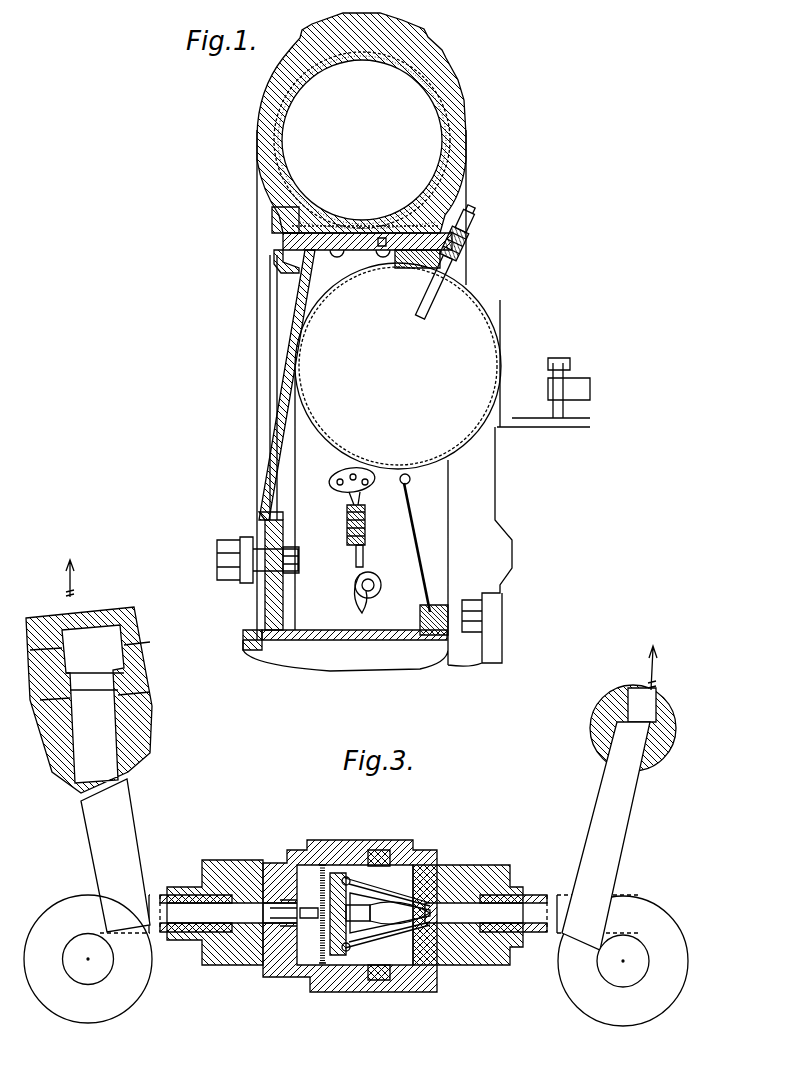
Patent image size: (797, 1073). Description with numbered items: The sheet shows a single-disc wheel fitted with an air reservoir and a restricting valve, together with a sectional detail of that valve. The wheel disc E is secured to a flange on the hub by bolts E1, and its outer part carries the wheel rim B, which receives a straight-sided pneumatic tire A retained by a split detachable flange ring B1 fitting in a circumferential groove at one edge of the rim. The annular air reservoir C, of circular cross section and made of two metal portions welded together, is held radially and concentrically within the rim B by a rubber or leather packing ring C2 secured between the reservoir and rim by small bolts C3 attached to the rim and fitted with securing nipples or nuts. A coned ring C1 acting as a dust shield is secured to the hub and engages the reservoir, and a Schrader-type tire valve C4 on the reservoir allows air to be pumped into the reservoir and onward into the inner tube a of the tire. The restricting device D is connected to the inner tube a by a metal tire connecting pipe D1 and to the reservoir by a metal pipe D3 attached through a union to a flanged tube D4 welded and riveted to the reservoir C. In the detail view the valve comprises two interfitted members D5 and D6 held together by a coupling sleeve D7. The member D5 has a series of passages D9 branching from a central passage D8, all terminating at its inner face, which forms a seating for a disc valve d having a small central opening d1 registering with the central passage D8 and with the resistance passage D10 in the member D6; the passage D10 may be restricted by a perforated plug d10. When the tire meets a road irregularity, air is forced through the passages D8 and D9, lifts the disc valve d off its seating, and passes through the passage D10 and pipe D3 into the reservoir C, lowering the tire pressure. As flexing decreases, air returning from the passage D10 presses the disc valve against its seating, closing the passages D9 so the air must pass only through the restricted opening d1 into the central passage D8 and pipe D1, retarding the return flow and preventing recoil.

In FIG. 1, the pneumatic tire A is at (458, 104).
In FIG. 1, the inner tube a is at (420, 232).
In FIG. 1, the wheel rim B is at (455, 210).
In FIG. 1, the split detachable flange ring B1 is at (283, 238).
In FIG. 1, the air reservoir C is at (488, 306).
In FIG. 1, the coned ring C1 is at (420, 546).
In FIG. 1, the packing ring C2 is at (432, 262).
In FIG. 1, the small bolts C3 is at (452, 243).
In FIG. 1, the tire valve C4 is at (458, 268).
In FIG. 1, the restricting device D is at (374, 582).
In FIG. 3, the restricting device D is at (342, 826).
In FIG. 3, the tire connecting pipe D1 is at (620, 906).
In FIG. 1, the reservoir connecting pipe D3 is at (290, 586).
In FIG. 3, the reservoir connecting pipe D3 is at (112, 799).
In FIG. 1, the flanged tube D4 is at (345, 482).
In FIG. 3, the flanged tube D4 is at (134, 638).
In FIG. 3, the valve member D5 is at (440, 882).
In FIG. 3, the valve member D6 is at (213, 862).
In FIG. 3, the coupling sleeve D7 is at (428, 990).
In FIG. 3, the central passage D8 is at (351, 915).
In FIG. 3, the branching passages D9 is at (378, 930).
In FIG. 3, the resistance passage D10 is at (256, 912).
In FIG. 3, the disc valve d is at (321, 962).
In FIG. 3, the central opening d1 is at (310, 930).
In FIG. 3, the perforated plug d10 is at (291, 925).
In FIG. 1, the disc E is at (284, 402).
In FIG. 1, the bolts E1 is at (245, 555).